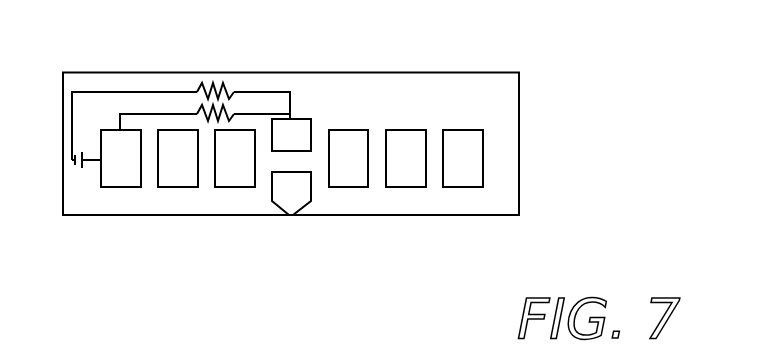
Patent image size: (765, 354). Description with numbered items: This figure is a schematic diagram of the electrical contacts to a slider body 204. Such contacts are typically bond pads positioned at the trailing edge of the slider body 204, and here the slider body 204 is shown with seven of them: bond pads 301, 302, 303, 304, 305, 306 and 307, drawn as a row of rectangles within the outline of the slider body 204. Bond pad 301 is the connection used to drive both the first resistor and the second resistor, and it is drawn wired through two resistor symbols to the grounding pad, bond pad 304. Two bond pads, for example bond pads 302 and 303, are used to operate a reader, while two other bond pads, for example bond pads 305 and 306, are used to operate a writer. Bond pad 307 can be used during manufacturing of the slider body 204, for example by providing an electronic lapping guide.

The slider body 204 is at (512, 72).
The bond pad 301 is at (110, 187).
The bond pad 302 is at (170, 187).
The bond pad 303 is at (235, 187).
The bond pad 304 is at (305, 119).
The bond pad 305 is at (348, 187).
The bond pad 306 is at (407, 187).
The bond pad 307 is at (460, 187).